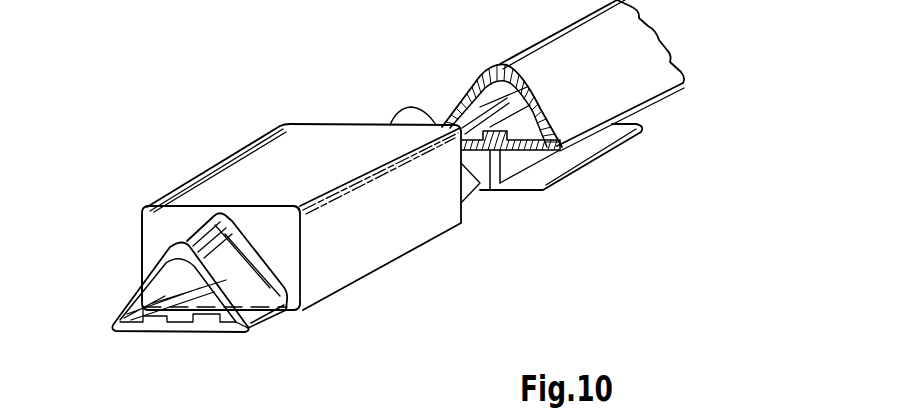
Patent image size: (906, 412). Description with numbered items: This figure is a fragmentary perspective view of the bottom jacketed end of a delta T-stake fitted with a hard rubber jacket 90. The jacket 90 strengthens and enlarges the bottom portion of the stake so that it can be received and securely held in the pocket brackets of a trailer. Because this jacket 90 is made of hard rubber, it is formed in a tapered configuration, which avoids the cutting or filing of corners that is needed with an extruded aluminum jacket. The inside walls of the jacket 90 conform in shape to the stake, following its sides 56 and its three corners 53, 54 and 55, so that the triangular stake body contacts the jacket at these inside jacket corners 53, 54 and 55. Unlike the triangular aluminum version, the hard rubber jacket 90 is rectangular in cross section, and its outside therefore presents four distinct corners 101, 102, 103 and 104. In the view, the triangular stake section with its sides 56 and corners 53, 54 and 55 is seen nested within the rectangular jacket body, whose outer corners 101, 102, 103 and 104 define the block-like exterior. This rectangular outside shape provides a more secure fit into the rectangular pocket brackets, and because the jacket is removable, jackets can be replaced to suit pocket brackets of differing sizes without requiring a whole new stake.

The jacket 90 is at (253, 157).
The corner 55 is at (182, 246).
The corner 53 is at (112, 327).
The corner 54 is at (248, 329).
The sides 56 is at (147, 282).
The outside corner 101 is at (301, 311).
The outside corner 102 is at (301, 208).
The outside corner 103 is at (141, 212).
The outside corner 104 is at (143, 313).